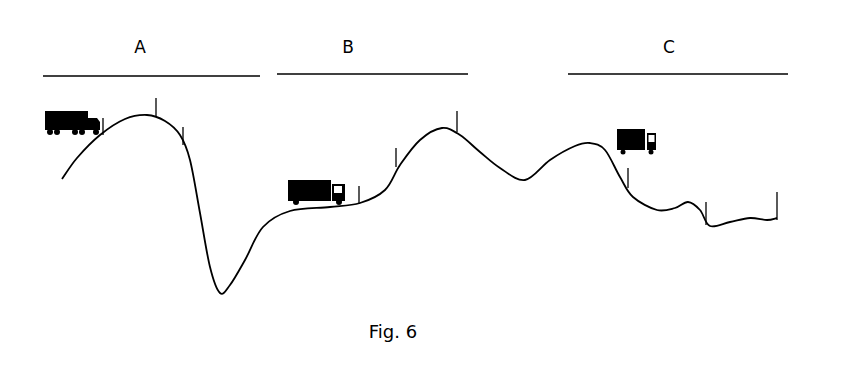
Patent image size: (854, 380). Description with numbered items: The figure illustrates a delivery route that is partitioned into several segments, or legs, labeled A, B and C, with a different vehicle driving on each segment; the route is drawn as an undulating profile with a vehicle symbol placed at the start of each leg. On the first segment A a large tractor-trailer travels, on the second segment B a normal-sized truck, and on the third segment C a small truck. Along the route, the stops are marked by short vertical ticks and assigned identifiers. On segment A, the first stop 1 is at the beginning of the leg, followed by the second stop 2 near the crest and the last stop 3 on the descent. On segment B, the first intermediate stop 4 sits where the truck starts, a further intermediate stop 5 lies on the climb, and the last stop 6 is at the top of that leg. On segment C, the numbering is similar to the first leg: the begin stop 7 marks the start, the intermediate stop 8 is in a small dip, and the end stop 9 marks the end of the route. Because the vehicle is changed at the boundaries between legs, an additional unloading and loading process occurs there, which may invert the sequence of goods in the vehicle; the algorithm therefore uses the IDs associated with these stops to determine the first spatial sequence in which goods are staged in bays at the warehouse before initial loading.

The first stop 1 is at (110, 123).
The second stop 2 is at (163, 105).
The last stop 3 is at (190, 134).
The first intermediate stop 4 is at (366, 193).
The intermediate stop 5 is at (403, 155).
The last stop 6 is at (464, 119).
The begin stop 7 is at (635, 176).
The intermediate stop 8 is at (713, 212).
The end stop 9 is at (784, 204).